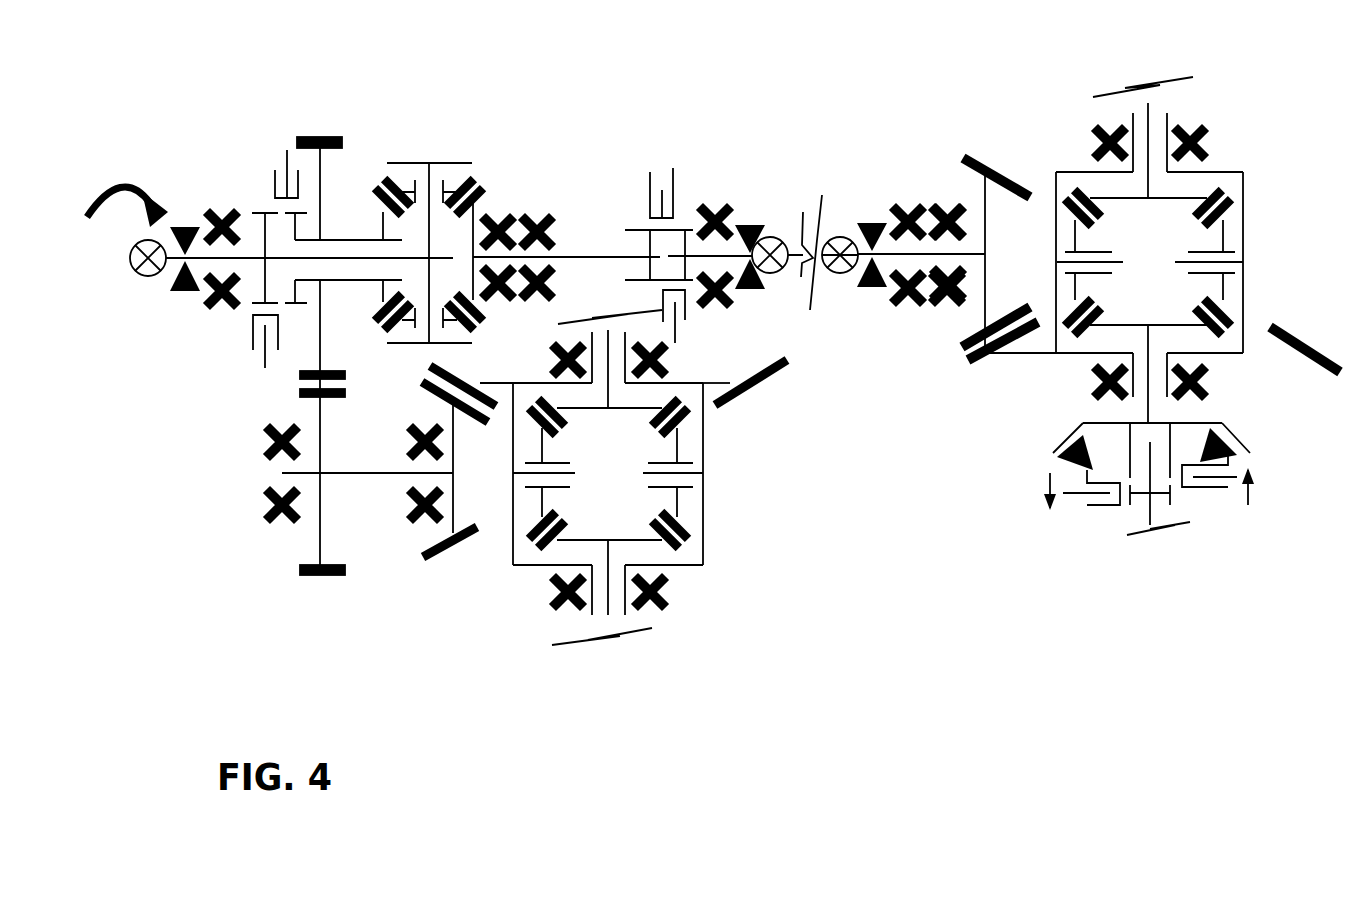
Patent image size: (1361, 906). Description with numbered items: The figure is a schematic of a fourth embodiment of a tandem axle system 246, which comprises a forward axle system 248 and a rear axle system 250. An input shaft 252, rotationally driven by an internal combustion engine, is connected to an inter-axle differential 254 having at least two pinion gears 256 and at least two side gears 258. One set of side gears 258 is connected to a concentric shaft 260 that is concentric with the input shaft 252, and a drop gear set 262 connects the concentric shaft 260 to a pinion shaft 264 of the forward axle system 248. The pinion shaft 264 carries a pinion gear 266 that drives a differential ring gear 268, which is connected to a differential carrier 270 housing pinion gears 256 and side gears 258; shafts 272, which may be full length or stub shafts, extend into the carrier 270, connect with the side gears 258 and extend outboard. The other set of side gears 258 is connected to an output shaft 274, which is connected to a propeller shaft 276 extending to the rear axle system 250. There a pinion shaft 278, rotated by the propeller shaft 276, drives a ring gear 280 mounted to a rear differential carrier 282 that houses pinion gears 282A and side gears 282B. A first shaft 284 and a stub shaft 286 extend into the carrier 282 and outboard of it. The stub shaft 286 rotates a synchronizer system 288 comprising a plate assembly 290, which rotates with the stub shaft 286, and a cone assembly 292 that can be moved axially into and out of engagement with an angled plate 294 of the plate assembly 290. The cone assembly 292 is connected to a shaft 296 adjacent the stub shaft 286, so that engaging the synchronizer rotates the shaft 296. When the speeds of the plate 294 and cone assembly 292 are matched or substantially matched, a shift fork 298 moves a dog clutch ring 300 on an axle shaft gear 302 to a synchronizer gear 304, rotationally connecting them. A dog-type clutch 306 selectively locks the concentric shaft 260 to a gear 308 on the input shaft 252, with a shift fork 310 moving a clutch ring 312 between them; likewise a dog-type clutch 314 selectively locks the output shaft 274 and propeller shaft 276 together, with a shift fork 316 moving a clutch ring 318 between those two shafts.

The tandem axle system 246 is at (598, 120).
The forward axle system 248 is at (730, 585).
The rear axle system 250 is at (1239, 106).
The input shaft 252 is at (247, 257).
The inter-axle differential 254 is at (437, 155).
The pinion gears 256 is at (473, 182).
The side gears 258 is at (483, 192).
The concentric shaft 260 is at (345, 240).
The drop gear set 262 is at (275, 392).
The pinion shaft 264 is at (362, 475).
The pinion gear 266 is at (450, 552).
The differential ring gear 268 is at (777, 378).
The differential carrier 270 is at (703, 490).
The shafts 272 is at (605, 345).
The output shaft 274 is at (590, 256).
The propeller shaft 276 is at (868, 241).
The pinion shaft 278 is at (975, 157).
The ring gear 280 is at (966, 362).
The rear differential carrier 282 is at (1243, 277).
The pinion gears 282A is at (1232, 310).
The side gears 282B is at (1222, 332).
The first shaft 284 is at (1148, 105).
The stub shaft 286 is at (1143, 410).
The synchronizer system 288 is at (1025, 532).
The plate assembly 290 is at (1262, 440).
The cone assembly 292 is at (1030, 463).
The angled plate 294 is at (1072, 430).
The shaft 296 is at (1152, 520).
The shift fork 298 is at (1226, 480).
The dog clutch ring 300 is at (1130, 534).
The axle shaft gear 302 is at (1172, 497).
The synchronizer gear 304 is at (1172, 432).
The clutch 306 is at (262, 118).
The gear 308 is at (265, 315).
The shift fork 310 is at (284, 150).
The clutch ring 312 is at (275, 172).
The clutch 314 is at (680, 152).
The shift fork 316 is at (650, 173).
The clutch ring 318 is at (673, 195).